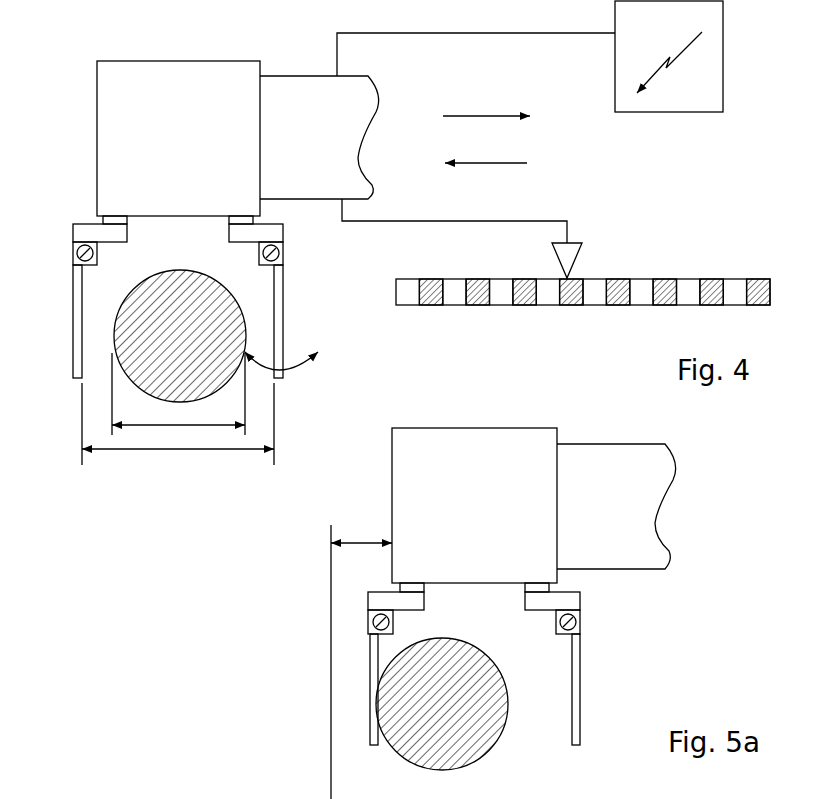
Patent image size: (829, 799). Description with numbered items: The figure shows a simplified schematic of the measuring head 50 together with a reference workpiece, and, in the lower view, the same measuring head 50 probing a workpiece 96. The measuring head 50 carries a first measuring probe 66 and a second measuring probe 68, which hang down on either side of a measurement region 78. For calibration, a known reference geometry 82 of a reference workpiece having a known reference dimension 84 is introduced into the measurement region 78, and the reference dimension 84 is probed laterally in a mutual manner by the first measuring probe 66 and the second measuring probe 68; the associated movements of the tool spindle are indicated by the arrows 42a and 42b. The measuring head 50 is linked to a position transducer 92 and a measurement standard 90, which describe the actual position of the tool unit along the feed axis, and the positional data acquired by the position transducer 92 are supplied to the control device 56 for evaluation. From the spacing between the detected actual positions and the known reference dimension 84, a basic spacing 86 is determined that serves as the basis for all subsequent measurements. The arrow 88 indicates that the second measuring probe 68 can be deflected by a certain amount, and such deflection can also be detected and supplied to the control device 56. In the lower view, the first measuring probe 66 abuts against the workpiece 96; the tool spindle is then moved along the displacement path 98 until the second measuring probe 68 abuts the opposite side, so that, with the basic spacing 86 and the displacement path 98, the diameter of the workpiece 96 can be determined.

In FIG. 4, the measuring head 50 is at (178, 93).
In FIG. 5A, the measuring head 50 is at (480, 448).
In FIG. 4, the control device 56 is at (723, 58).
In FIG. 4, the arrow 42a is at (487, 115).
In FIG. 4, the arrow 42b is at (493, 163).
In FIG. 4, the position transducer 92 is at (580, 253).
In FIG. 4, the measurement standard 90 is at (670, 278).
In FIG. 4, the first measuring probe 66 is at (78, 280).
In FIG. 5A, the first measuring probe 66 is at (370, 717).
In FIG. 4, the second measuring probe 68 is at (282, 285).
In FIG. 4, the measurement region 78 is at (113, 303).
In FIG. 4, the reference geometry 82 is at (222, 317).
In FIG. 4, the reference dimension 84 is at (153, 427).
In FIG. 4, the basic spacing 86 is at (178, 450).
In FIG. 4, the arrow 88 is at (297, 369).
In FIG. 5A, the workpiece 96 is at (473, 732).
In FIG. 5A, the displacement path 98 is at (362, 543).